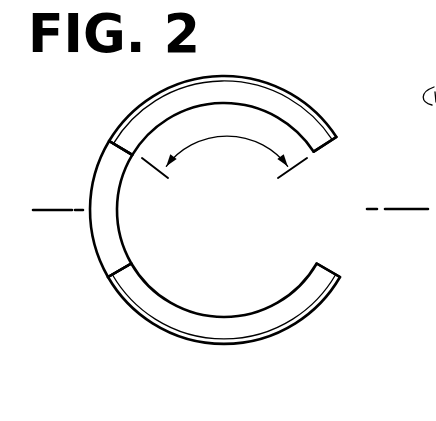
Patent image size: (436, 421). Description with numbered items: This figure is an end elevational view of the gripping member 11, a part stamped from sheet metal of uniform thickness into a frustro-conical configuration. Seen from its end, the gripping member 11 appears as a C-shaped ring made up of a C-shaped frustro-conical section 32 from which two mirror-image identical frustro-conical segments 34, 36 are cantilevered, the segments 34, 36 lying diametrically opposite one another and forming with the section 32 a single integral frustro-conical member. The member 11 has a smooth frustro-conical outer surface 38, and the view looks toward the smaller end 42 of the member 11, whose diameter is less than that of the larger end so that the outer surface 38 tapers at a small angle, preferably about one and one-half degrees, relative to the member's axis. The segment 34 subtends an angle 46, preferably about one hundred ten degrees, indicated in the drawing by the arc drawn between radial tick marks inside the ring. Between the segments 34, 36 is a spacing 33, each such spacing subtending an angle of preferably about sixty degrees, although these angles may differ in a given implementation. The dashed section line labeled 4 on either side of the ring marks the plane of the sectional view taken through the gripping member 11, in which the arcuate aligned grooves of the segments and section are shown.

The gripping member 11 is at (231, 214).
The C-shaped frustro-conical section 32 is at (127, 240).
The spacing 33 is at (320, 177).
The frustro-conical segment 34 is at (295, 113).
The frustro-conical segment 36 is at (236, 348).
The frustro-conical outer surface 38 is at (284, 46).
The smaller end 42 is at (268, 317).
The angle 46 is at (253, 143).
The section line 4- 4 is at (412, 226).